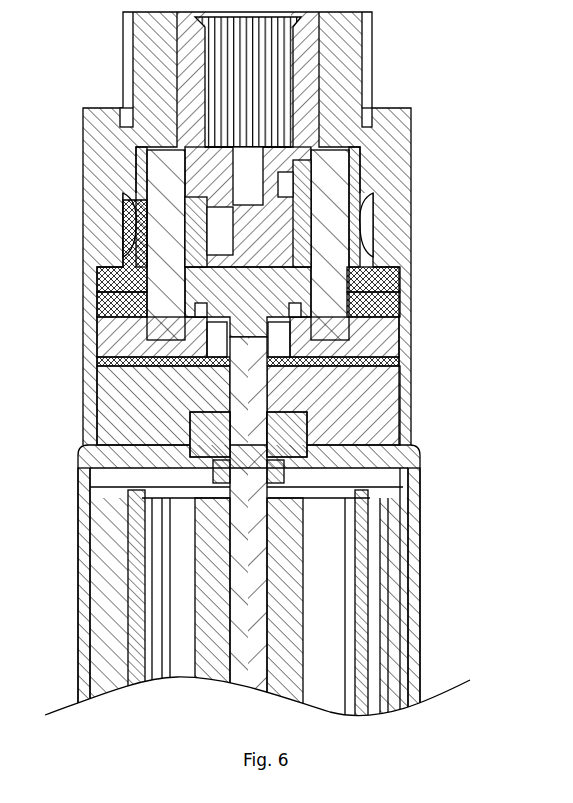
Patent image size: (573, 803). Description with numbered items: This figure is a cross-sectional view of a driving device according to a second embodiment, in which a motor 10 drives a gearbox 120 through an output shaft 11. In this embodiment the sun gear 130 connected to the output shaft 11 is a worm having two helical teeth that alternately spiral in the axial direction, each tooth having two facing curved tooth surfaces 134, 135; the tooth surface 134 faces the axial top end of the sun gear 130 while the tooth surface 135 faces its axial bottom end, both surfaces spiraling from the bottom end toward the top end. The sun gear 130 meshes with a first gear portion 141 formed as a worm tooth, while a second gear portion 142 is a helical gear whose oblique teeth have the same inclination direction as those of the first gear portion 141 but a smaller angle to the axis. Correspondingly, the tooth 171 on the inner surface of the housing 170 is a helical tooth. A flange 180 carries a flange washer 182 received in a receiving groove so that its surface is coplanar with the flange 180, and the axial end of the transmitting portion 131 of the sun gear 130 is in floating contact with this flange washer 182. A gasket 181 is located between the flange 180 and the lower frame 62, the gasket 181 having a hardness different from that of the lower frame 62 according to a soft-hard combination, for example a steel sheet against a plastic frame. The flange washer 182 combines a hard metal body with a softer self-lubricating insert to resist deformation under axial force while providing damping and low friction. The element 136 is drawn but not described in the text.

The motor 10 is at (420, 577).
The output shaft 11 is at (397, 478).
The lower frame 62 is at (107, 318).
The gearbox 120 is at (437, 313).
The sun gear 130 is at (402, 355).
The transmitting portion 131 is at (402, 407).
The tooth surface 134 is at (395, 272).
The tooth surface 135 is at (395, 300).
The flange 136 is at (80, 456).
The first gear portion 141 is at (107, 290).
The second gear portion 142 is at (135, 233).
The housing 170 is at (411, 145).
The tooth 171 is at (402, 198).
The flange 180 is at (93, 420).
The gasket 181 is at (100, 333).
The flange washer 182 is at (90, 358).